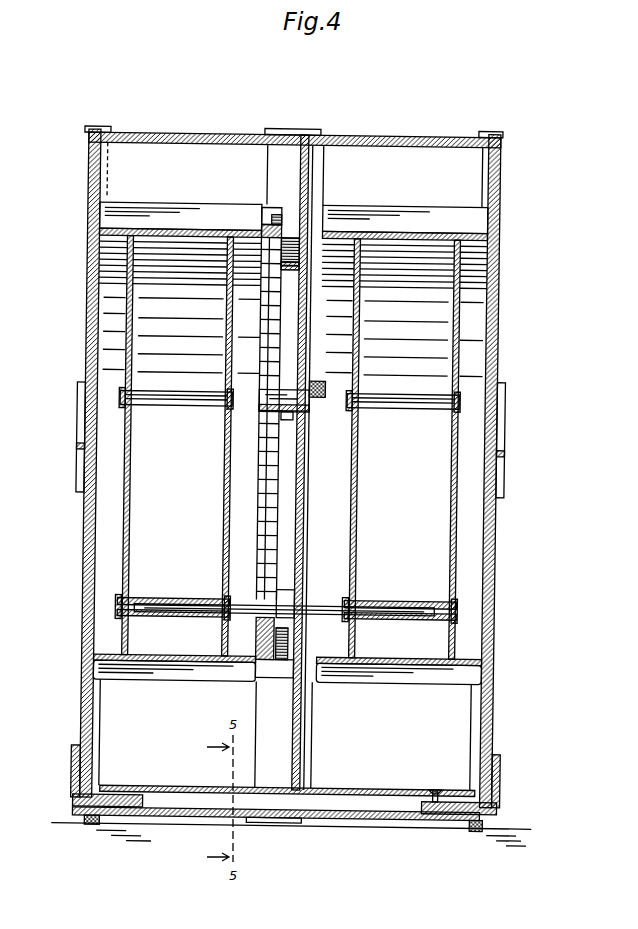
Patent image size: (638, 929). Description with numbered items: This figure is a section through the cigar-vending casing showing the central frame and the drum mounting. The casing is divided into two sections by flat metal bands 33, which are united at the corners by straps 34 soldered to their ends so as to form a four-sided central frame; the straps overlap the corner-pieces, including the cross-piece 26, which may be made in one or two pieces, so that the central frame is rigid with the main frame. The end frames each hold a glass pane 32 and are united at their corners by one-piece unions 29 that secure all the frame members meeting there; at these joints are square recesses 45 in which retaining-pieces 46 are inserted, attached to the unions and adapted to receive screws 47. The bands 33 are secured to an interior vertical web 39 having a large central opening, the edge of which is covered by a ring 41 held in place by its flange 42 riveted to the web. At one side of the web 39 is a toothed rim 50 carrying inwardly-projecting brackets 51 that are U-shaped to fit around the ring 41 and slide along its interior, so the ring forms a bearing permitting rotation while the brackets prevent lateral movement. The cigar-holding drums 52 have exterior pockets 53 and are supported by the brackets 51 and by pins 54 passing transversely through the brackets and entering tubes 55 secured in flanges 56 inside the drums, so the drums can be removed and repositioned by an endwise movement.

The cross-piece 26 is at (408, 794).
The corner-piece 29 is at (506, 797).
The glass pane 32 is at (88, 235).
The flat metal band 33 is at (315, 135).
The strap 34 is at (304, 823).
The interior vertical plate or web 39 is at (310, 172).
The ring 41 is at (312, 282).
The flange 42 is at (312, 232).
The square recess 45 is at (418, 805).
The retaining-piece 46 is at (464, 814).
The screw 47 is at (451, 788).
The toothed rim 50 is at (278, 208).
The bracket 51 is at (306, 414).
The cigar-holding drum 52 is at (134, 497).
The exterior pocket 53 is at (428, 222).
The pin 54 is at (252, 407).
The tube 55 is at (448, 623).
The flange 56 is at (130, 635).